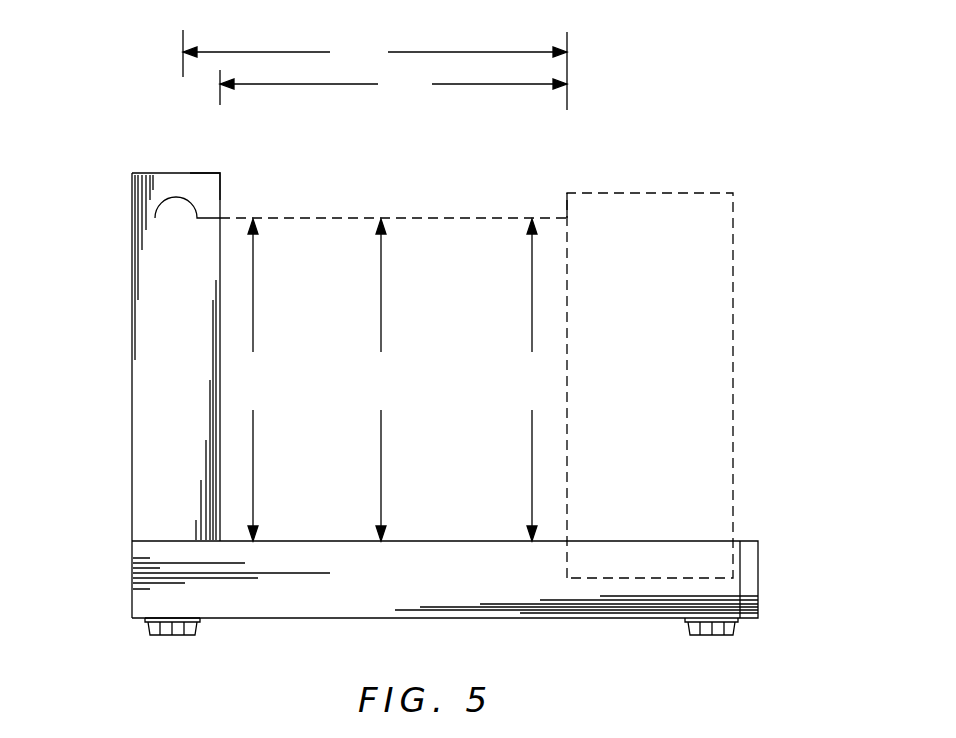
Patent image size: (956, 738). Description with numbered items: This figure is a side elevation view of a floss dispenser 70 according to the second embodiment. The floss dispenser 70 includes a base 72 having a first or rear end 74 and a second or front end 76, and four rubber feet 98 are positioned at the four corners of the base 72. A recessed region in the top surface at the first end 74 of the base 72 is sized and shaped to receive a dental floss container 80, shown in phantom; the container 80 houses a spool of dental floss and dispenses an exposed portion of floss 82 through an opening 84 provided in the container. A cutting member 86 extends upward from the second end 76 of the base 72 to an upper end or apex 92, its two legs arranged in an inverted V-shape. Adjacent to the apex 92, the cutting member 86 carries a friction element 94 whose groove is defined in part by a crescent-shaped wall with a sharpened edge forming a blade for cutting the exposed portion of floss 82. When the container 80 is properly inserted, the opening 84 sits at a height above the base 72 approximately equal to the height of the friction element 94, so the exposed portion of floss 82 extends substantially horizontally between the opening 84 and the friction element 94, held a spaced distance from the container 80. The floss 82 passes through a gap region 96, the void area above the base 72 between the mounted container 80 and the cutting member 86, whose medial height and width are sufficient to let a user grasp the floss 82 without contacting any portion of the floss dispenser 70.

The floss dispenser 70 is at (90, 291).
The base 72 is at (357, 590).
The first or rear end 74 is at (748, 562).
The second or front end 76 is at (152, 605).
The dental floss container 80 is at (735, 408).
The exposed portion of floss 82 is at (355, 217).
The opening 84 is at (565, 217).
The cutting member 86 is at (155, 435).
The upper end or apex 92 is at (218, 173).
The friction element 94 is at (176, 212).
The gap region 96 is at (465, 280).
The rubber feet 98 is at (180, 635).